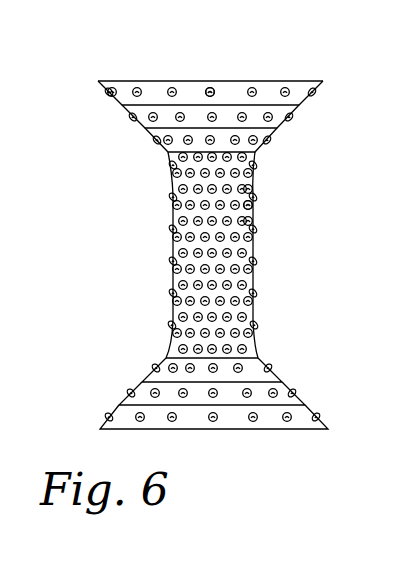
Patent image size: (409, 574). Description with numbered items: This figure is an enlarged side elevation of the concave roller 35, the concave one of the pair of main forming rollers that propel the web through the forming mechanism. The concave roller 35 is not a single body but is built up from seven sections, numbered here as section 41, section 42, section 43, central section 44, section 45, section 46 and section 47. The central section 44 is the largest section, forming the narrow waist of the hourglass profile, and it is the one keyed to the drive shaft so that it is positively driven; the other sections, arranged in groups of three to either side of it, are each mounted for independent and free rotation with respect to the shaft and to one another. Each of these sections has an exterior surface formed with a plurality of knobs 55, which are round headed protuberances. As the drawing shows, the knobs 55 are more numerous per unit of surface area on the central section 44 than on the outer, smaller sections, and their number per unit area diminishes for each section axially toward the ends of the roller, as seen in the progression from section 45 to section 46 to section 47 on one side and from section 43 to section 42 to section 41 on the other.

The concave roller 35 is at (256, 73).
The roller section 41 is at (311, 95).
The roller section 42 is at (283, 125).
The roller section 43 is at (262, 147).
The central section 44 is at (186, 262).
The roller section 45 is at (160, 372).
The roller section 46 is at (142, 392).
The roller section 47 is at (124, 413).
The knobs 55 is at (207, 90).